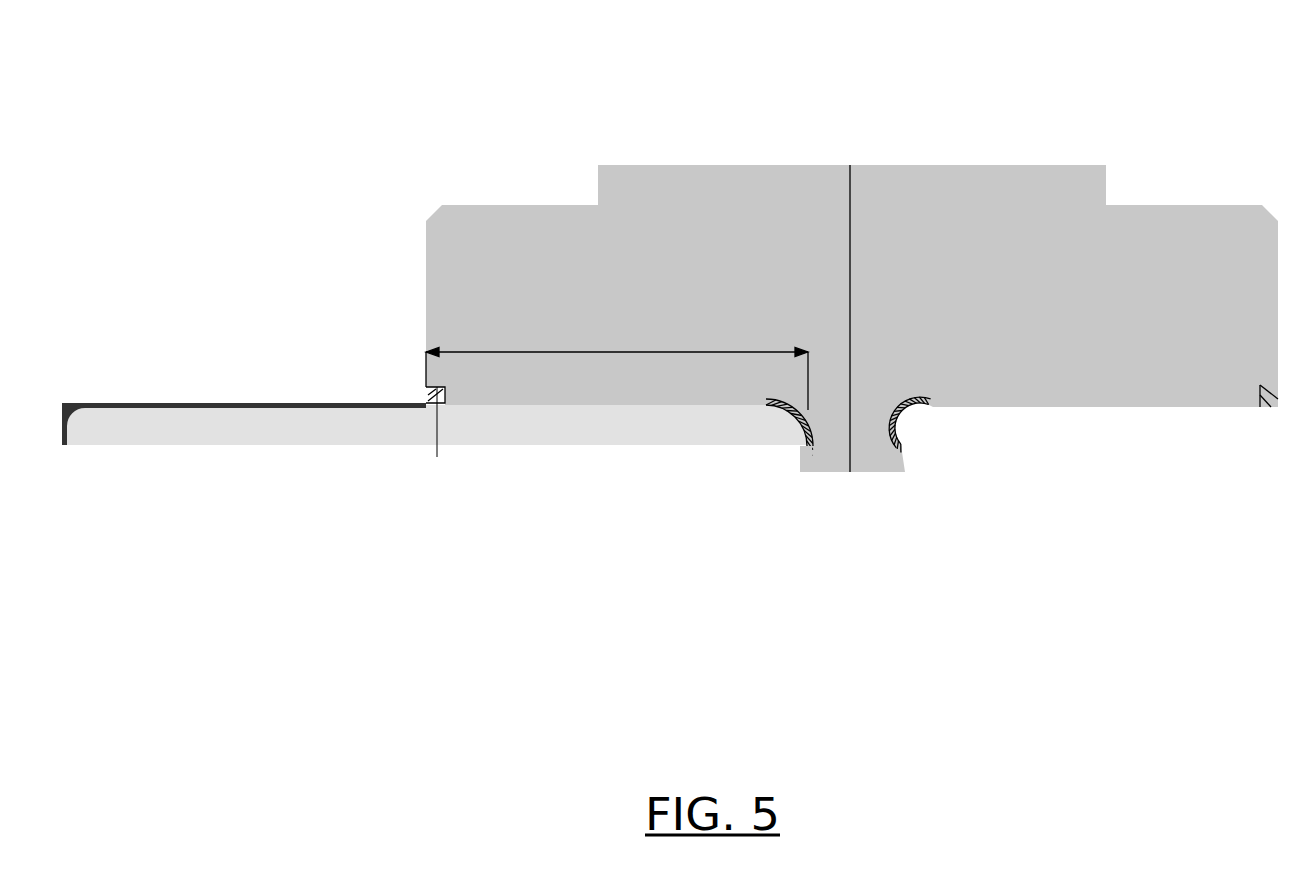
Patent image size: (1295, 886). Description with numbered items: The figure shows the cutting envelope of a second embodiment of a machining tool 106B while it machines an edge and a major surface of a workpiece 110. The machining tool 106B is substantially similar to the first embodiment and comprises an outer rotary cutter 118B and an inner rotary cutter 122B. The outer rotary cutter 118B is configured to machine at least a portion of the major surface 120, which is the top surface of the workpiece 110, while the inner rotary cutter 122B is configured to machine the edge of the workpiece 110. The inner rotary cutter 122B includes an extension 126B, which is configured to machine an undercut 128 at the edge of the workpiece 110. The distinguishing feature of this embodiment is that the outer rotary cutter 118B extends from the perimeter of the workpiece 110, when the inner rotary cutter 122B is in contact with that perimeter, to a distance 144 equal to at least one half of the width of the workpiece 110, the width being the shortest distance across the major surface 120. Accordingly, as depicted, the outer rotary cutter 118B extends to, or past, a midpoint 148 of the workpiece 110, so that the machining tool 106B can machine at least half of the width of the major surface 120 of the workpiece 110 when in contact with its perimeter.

The machining tool 106B is at (448, 58).
The workpiece 110 is at (370, 441).
The major surface 120 is at (246, 398).
The outer rotary cutter 118B is at (428, 386).
The midpoint 148 is at (432, 429).
The distance 144 is at (604, 351).
The inner rotary cutter 122B is at (787, 397).
The extension 126B is at (897, 440).
The undercut 128 is at (812, 451).